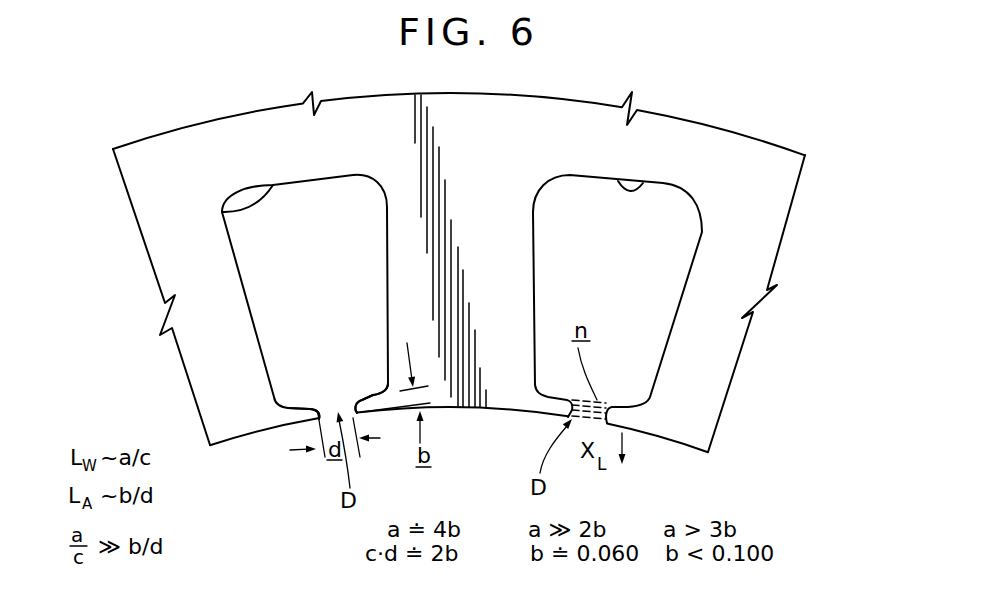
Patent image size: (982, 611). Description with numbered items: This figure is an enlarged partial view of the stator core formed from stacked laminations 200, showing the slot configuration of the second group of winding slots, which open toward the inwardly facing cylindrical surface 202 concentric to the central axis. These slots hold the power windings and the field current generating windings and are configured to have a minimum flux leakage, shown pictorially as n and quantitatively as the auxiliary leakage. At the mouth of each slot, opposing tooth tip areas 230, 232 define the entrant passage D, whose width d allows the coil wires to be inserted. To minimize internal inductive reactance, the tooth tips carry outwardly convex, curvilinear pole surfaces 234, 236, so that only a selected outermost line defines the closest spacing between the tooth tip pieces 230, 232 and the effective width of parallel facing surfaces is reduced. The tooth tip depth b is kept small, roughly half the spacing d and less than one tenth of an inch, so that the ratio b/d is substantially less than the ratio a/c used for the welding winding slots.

The laminations 200 is at (775, 224).
The inwardly facing cylindrical surface 202 is at (500, 410).
The tooth tip area 230 is at (313, 408).
The tooth tip area 232 is at (360, 398).
The curvilinear pole surface 234 is at (317, 418).
The curvilinear pole surface 236 is at (355, 404).